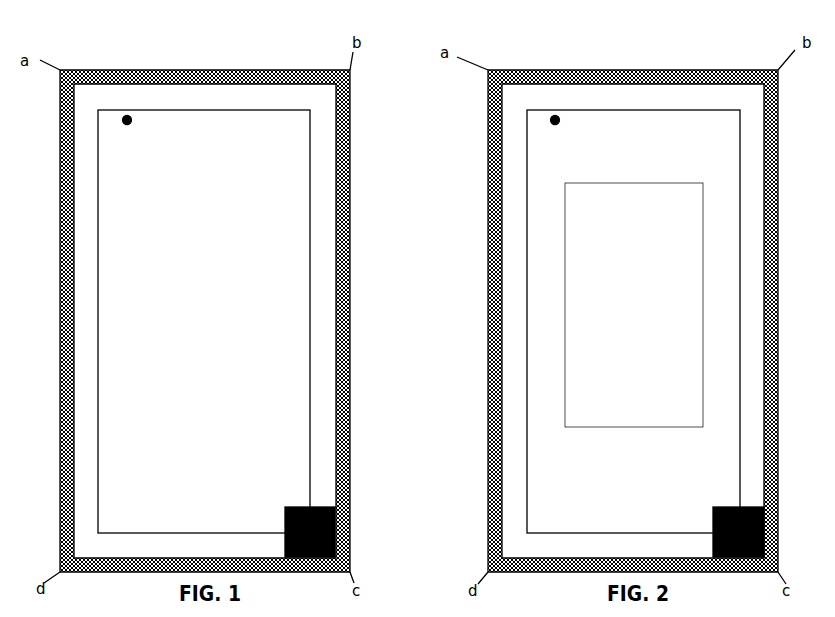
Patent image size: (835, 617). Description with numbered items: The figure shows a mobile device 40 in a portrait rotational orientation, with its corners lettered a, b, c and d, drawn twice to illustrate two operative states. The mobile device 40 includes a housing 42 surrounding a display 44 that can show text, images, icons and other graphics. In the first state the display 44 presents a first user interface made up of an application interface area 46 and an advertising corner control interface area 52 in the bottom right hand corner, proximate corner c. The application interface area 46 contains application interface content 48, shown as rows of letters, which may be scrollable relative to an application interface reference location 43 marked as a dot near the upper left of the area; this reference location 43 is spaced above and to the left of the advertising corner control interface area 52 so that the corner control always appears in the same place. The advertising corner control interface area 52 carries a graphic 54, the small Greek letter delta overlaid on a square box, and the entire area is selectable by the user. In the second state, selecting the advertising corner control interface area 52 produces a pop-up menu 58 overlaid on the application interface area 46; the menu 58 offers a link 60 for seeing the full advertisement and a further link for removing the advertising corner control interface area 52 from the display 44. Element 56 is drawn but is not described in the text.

In FIG. 1, the mobile device 40 is at (178, 63).
In FIG. 2, the mobile device 40 is at (600, 60).
In FIG. 1, the housing 42 is at (350, 82).
In FIG. 2, the housing 42 is at (488, 82).
In FIG. 1, the application interface reference location 43 is at (125, 118).
In FIG. 2, the application interface reference location 43 is at (553, 117).
In FIG. 1, the display 44 is at (325, 133).
In FIG. 2, the display 44 is at (520, 133).
In FIG. 1, the application interface area 46 is at (297, 187).
In FIG. 2, the application interface area 46 is at (528, 187).
In FIG. 1, the application interface content 48 is at (287, 242).
In FIG. 2, the application interface content 48 is at (557, 238).
In FIG. 1, the advertising corner control interface area 52 is at (335, 548).
In FIG. 2, the advertising corner control interface area 52 is at (764, 548).
In FIG. 1, the graphic 54 is at (318, 528).
In FIG. 2, the graphic 54 is at (746, 528).
In FIG. 2, the advertisement overlay window 56 is at (582, 387).
In FIG. 2, the menu 58 is at (581, 272).
In FIG. 2, the link 60 is at (583, 340).